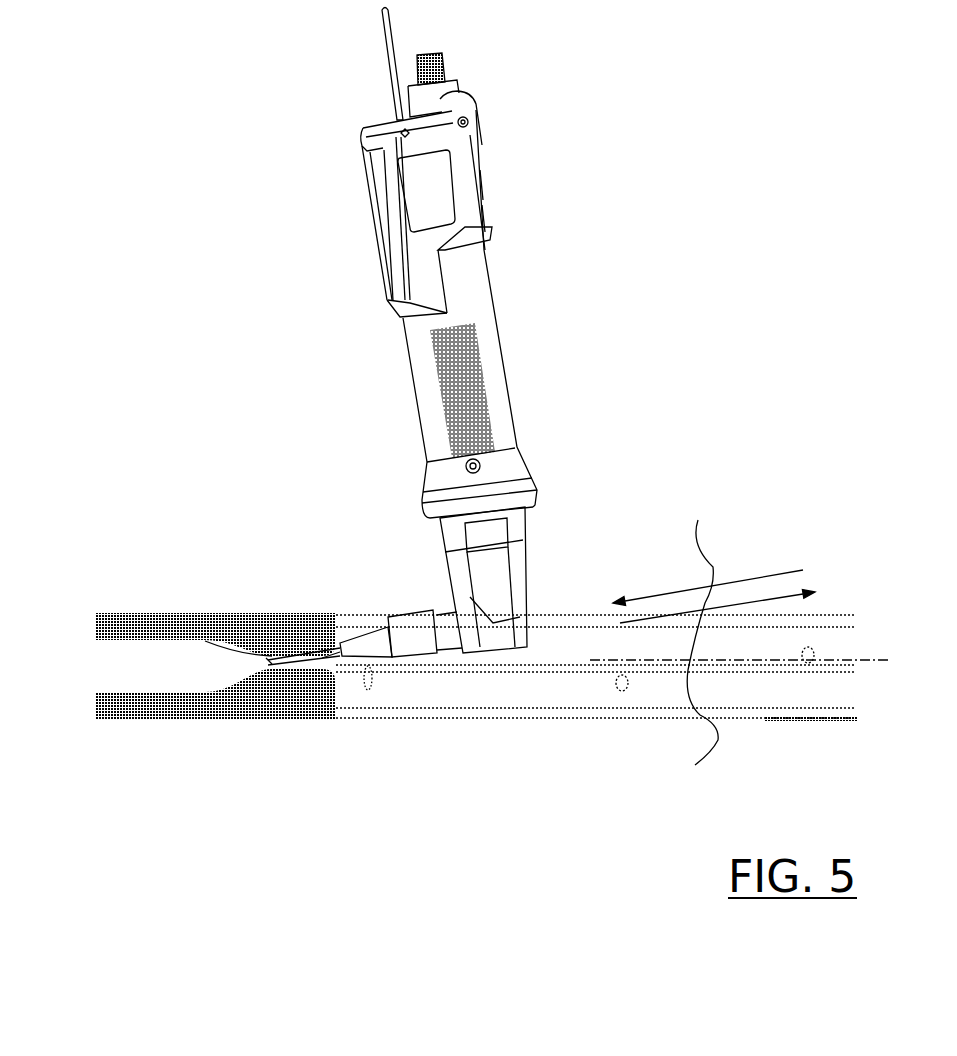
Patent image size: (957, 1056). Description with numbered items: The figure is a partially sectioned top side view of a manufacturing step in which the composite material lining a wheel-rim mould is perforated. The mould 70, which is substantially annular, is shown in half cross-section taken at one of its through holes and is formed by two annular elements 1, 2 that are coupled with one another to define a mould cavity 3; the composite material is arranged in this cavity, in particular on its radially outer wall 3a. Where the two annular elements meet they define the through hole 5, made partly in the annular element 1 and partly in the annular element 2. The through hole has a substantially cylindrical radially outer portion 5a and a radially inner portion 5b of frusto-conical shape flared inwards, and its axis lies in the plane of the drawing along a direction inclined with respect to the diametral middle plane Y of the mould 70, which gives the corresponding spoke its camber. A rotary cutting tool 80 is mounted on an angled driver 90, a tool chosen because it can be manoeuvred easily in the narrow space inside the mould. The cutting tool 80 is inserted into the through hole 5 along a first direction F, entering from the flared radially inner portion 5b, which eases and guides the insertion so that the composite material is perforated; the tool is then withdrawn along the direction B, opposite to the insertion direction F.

The annular element 1 is at (217, 716).
The annular element 2 is at (230, 610).
The mould cavity 3 is at (118, 665).
The radially outer wall 3a is at (263, 670).
The through hole 5 is at (320, 655).
The radially outer portion 5a is at (264, 664).
The radially inner portion 5b is at (322, 658).
The mould 70 is at (183, 659).
The cutting tool 80 is at (373, 643).
The angled driver 90 is at (372, 285).
The first direction F is at (699, 515).
The diametral middle plane Y is at (845, 660).
The direction opposite to the insertion direction B is at (701, 662).